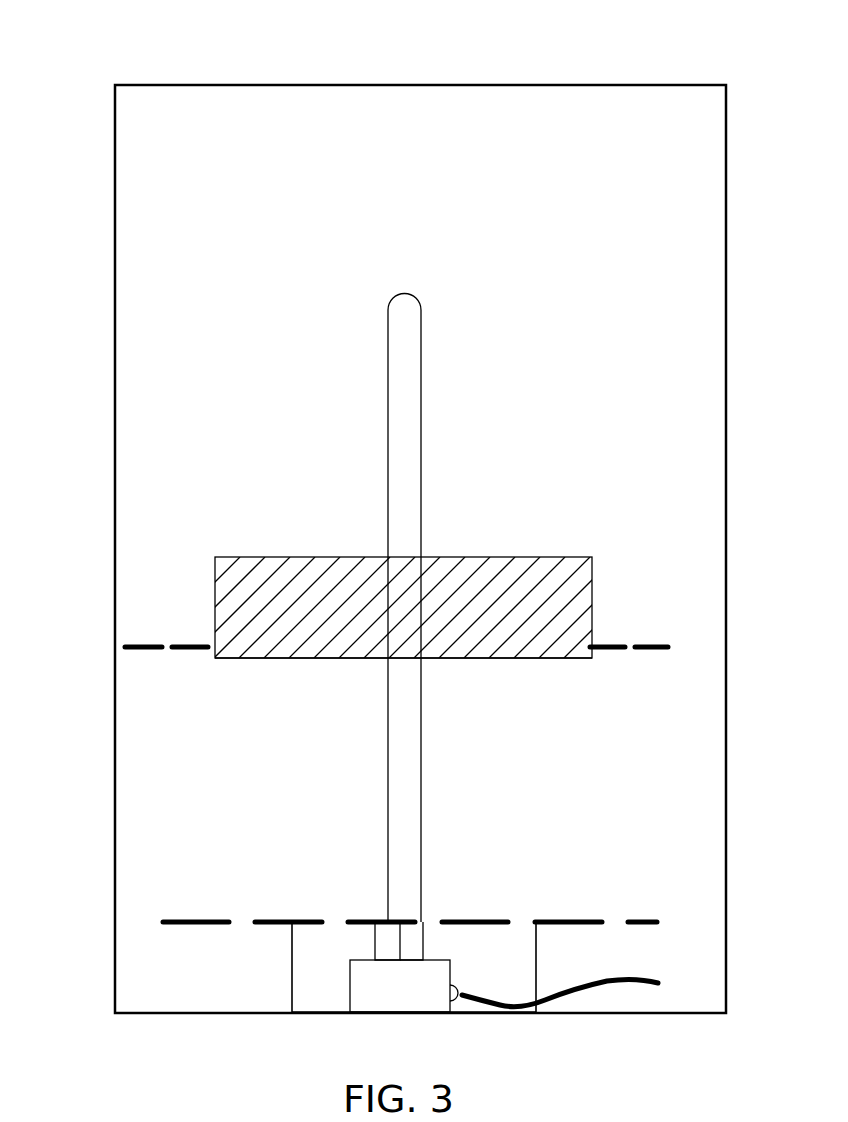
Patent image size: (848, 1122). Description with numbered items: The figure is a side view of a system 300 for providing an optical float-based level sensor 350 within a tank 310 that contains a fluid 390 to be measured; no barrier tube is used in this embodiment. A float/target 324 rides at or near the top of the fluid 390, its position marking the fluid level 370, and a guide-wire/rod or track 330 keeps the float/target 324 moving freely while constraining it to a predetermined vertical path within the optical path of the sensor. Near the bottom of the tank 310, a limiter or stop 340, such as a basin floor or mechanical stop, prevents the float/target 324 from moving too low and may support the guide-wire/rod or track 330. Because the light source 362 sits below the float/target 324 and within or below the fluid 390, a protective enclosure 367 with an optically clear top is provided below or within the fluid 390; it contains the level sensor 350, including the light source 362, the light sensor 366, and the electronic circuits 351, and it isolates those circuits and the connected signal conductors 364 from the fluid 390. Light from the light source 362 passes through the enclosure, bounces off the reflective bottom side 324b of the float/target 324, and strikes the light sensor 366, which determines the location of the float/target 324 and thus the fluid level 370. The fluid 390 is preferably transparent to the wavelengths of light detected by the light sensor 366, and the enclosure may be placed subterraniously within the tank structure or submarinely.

The system 300 is at (537, 47).
The tank 310 is at (727, 104).
The float/target 324 is at (290, 572).
The reflective bottom side 324b is at (267, 658).
The guide-wire/rod or track 330 is at (413, 480).
The limiter or stop 340 is at (450, 920).
The level sensor 350 is at (369, 994).
The electronic circuits 351 is at (362, 1000).
The light source 362 is at (387, 947).
The signal conductors 364 is at (594, 984).
The light sensor 366 is at (412, 936).
The protective enclosure 367 is at (288, 978).
The fluid level 370 is at (643, 638).
The fluid 390 is at (706, 766).